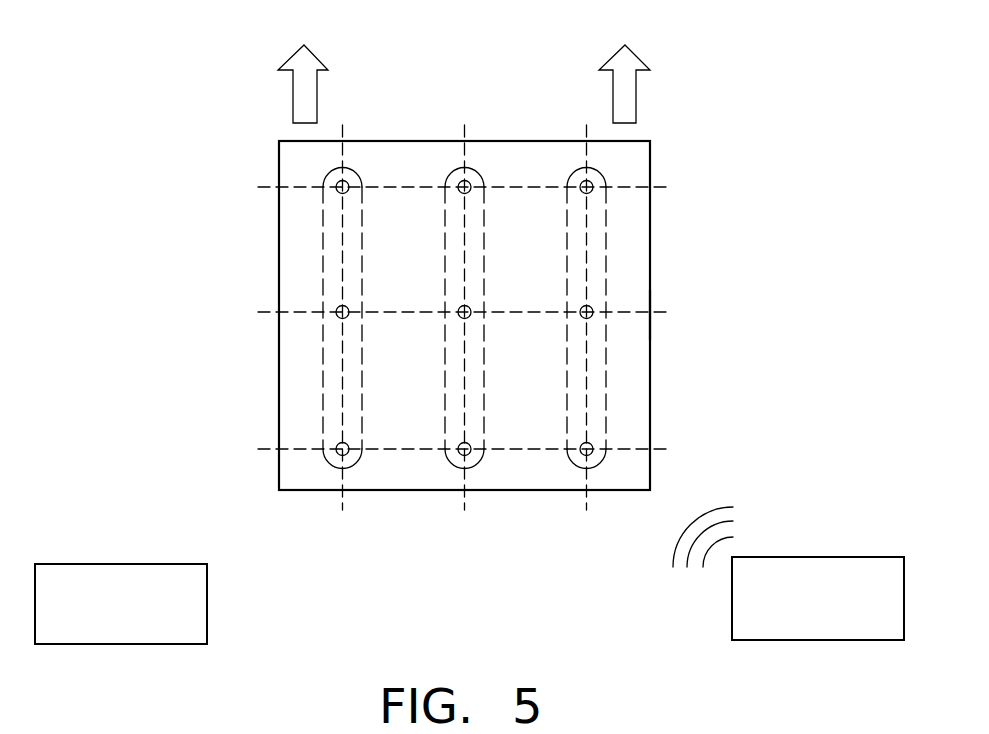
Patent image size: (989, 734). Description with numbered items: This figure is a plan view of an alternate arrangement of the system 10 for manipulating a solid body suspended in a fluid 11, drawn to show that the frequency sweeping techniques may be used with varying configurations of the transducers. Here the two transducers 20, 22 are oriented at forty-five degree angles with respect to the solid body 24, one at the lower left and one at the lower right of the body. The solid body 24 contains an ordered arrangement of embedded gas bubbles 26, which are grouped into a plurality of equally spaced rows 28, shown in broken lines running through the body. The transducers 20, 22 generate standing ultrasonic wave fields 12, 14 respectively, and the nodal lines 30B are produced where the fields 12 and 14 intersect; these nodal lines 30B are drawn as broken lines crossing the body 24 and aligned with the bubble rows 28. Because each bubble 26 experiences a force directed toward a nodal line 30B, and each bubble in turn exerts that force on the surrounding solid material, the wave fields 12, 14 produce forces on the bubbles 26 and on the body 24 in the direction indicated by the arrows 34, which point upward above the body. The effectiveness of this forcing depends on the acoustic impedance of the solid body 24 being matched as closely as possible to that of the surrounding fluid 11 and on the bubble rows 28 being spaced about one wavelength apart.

The system for manipulating a solid body suspended in a fluid 10 is at (170, 156).
The fluid 11 is at (684, 326).
The standing ultrasonic wave field 12 is at (232, 520).
The standing ultrasonic wave field 14 is at (700, 508).
The transducer 20 is at (148, 563).
The transducer 22 is at (857, 557).
The solid body 24 is at (505, 110).
The embedded gas bubbles 26 is at (462, 181).
The rows 28 is at (323, 408).
The nodal lines 30B is at (668, 187).
The arrows 34 is at (297, 98).